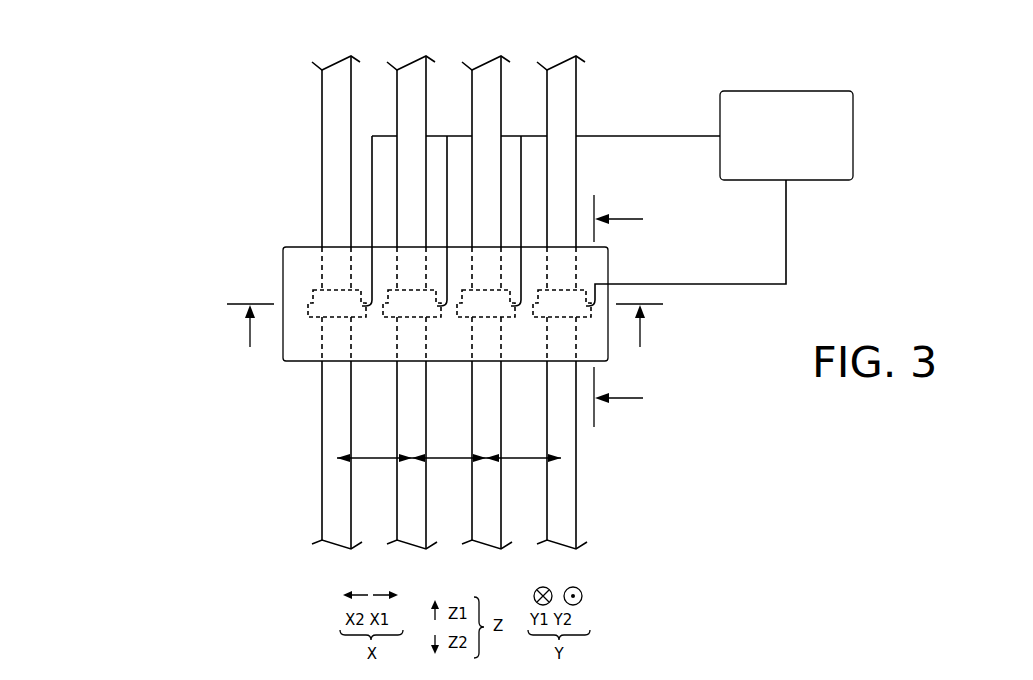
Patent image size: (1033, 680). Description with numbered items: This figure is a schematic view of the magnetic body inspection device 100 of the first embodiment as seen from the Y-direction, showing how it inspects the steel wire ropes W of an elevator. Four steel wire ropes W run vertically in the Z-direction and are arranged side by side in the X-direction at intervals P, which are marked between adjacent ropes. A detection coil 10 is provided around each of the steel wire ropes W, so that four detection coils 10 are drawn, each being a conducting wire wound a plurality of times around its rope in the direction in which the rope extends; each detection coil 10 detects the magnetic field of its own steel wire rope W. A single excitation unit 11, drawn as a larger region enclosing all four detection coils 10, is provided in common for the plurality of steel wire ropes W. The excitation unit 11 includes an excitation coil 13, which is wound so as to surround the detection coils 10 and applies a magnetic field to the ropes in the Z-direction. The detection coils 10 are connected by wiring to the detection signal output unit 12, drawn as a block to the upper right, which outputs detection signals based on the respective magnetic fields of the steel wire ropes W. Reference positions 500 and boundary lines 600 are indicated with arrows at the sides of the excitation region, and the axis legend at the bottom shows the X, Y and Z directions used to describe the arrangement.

The detection device 100 is at (166, 268).
The detection coil 10 is at (309, 310).
The excitation unit 11 is at (303, 247).
The excitation coil 13 is at (433, 273).
The detection signal output unit 12 is at (792, 91).
The steel wire rope W is at (320, 93).
The reference position 500 is at (445, 340).
The boundary line 600 is at (636, 311).
The interval P is at (449, 470).